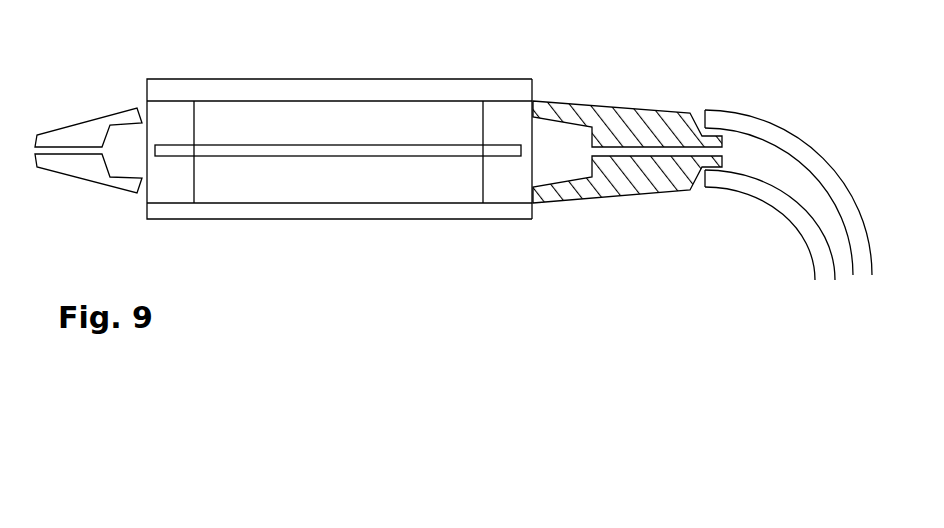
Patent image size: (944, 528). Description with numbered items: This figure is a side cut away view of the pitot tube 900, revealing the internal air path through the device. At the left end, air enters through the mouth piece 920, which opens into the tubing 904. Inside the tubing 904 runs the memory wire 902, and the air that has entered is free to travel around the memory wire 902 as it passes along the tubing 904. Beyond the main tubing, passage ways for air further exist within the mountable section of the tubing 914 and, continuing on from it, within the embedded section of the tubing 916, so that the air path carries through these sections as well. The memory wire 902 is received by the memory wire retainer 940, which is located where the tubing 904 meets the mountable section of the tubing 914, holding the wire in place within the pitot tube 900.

The pitot tube 900 is at (453, 176).
The memory wire 902 is at (237, 143).
The tubing 904 is at (375, 220).
The mountable section of the tubing 914 is at (562, 102).
The embedded section of the tubing 916 is at (720, 109).
The mouth piece 920 is at (37, 143).
The memory wire retainer 940 is at (533, 210).